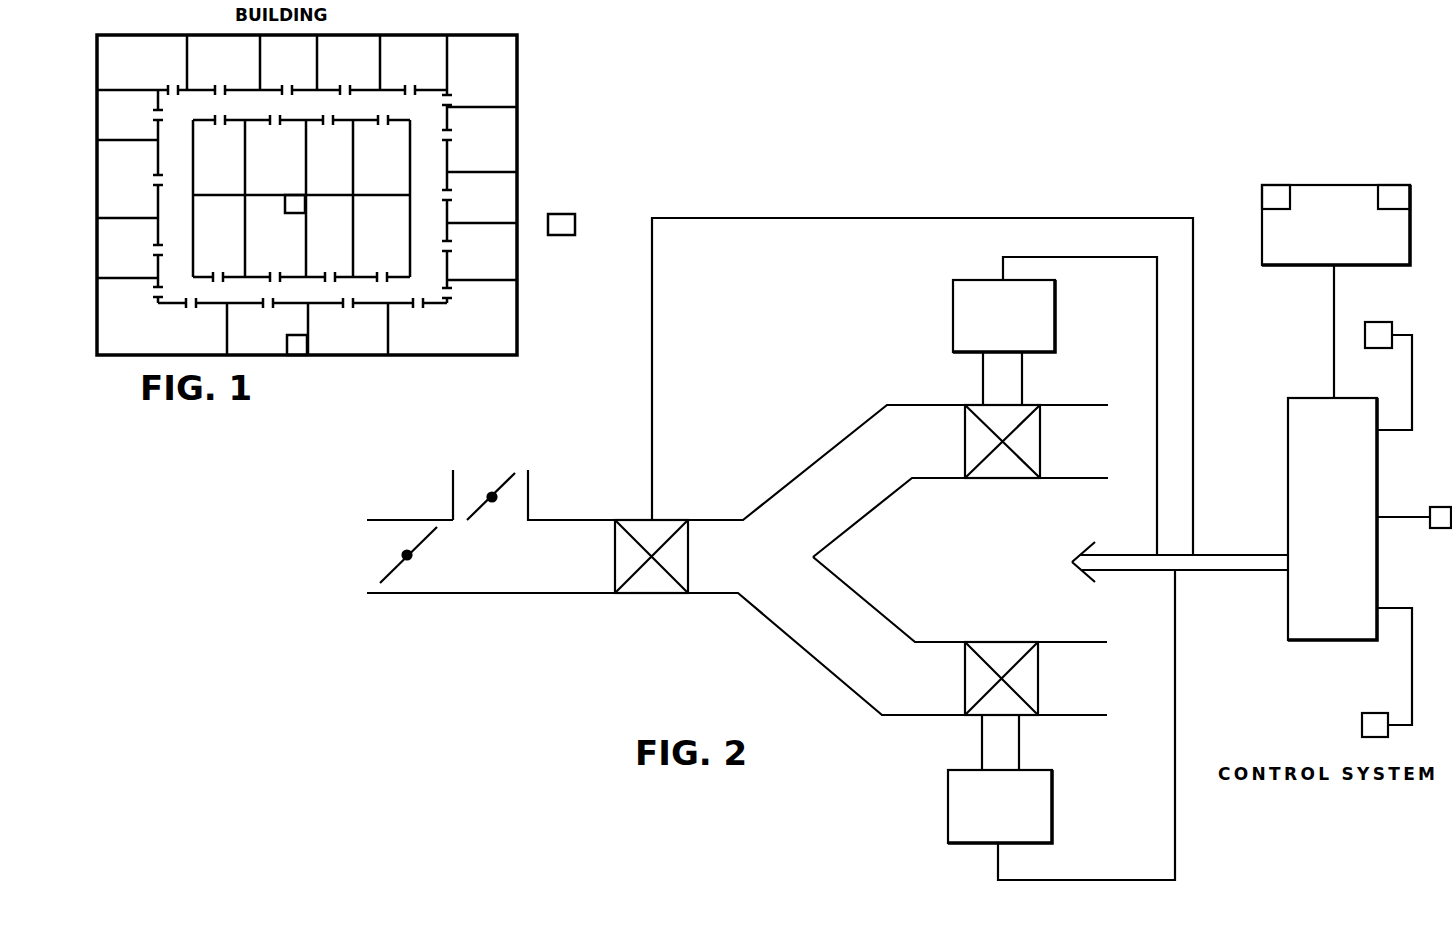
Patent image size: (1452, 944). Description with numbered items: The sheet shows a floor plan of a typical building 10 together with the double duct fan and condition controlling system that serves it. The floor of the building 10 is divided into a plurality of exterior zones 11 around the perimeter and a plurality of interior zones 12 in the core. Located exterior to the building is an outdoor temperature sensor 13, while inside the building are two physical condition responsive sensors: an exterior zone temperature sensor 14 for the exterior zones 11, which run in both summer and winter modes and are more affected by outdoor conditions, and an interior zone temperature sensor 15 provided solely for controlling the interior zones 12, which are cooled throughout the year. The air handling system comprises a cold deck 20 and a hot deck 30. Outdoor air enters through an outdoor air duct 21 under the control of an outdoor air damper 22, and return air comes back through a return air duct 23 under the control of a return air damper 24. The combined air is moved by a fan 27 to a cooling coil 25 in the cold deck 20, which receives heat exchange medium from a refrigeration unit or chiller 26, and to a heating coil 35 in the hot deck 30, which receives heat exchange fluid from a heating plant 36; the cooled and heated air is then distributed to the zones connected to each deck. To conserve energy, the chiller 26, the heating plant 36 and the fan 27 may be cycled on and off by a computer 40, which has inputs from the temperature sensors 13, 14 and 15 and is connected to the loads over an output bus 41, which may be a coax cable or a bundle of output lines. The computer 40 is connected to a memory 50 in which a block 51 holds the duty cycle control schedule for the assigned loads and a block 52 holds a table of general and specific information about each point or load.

In FIG. 1, the building 10 is at (343, 195).
In FIG. 1, the exterior zones 11 is at (488, 211).
In FIG. 1, the interior zones 12 is at (391, 244).
In FIG. 1, the outdoor temperature sensor 13 is at (562, 214).
In FIG. 2, the outdoor temperature sensor 13 is at (1378, 324).
In FIG. 1, the exterior zone temperature sensor 14 is at (287, 345).
In FIG. 2, the exterior zone temperature sensor 14 is at (1440, 507).
In FIG. 1, the interior zone temperature sensor 15 is at (293, 214).
In FIG. 2, the interior zone temperature sensor 15 is at (1376, 713).
In FIG. 2, the cold deck 20 is at (922, 407).
In FIG. 2, the outdoor air duct 21 is at (403, 595).
In FIG. 2, the outdoor air damper 22 is at (395, 565).
In FIG. 2, the return air duct 23 is at (528, 483).
In FIG. 2, the return air damper 24 is at (471, 513).
In FIG. 2, the cooling coil 25 is at (985, 480).
In FIG. 2, the chiller 26 is at (1055, 300).
In FIG. 2, the fan 27 is at (633, 595).
In FIG. 2, the hot deck 30 is at (931, 718).
In FIG. 2, the heating coil 35 is at (983, 642).
In FIG. 2, the heating plant 36 is at (1052, 808).
In FIG. 2, the computer 40 is at (1347, 628).
In FIG. 2, the output bus 41 is at (1224, 553).
In FIG. 2, the memory 50 is at (1336, 231).
In FIG. 2, the block 51 is at (1276, 194).
In FIG. 2, the block 52 is at (1396, 194).